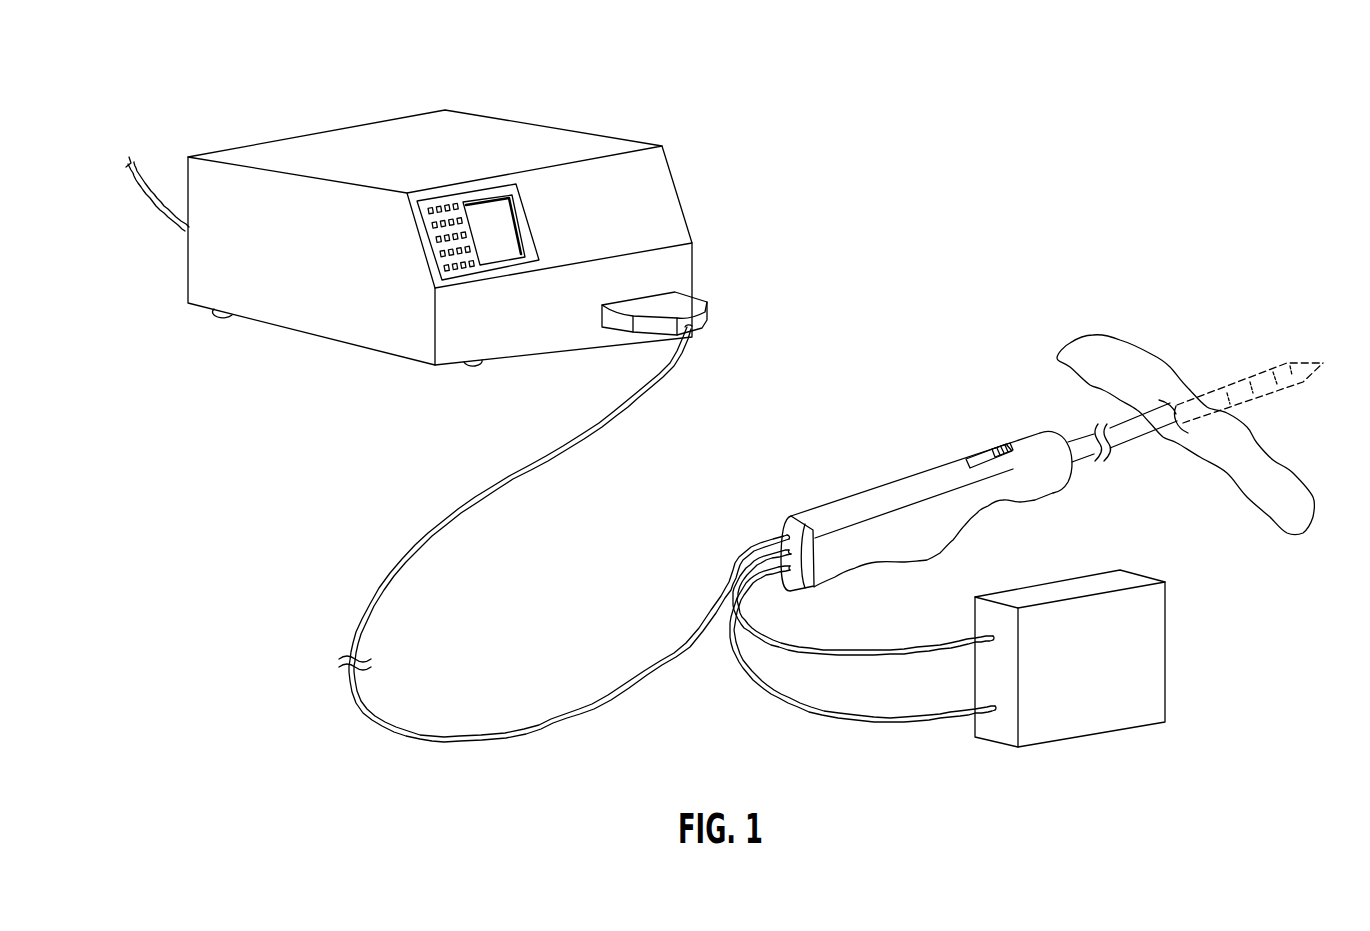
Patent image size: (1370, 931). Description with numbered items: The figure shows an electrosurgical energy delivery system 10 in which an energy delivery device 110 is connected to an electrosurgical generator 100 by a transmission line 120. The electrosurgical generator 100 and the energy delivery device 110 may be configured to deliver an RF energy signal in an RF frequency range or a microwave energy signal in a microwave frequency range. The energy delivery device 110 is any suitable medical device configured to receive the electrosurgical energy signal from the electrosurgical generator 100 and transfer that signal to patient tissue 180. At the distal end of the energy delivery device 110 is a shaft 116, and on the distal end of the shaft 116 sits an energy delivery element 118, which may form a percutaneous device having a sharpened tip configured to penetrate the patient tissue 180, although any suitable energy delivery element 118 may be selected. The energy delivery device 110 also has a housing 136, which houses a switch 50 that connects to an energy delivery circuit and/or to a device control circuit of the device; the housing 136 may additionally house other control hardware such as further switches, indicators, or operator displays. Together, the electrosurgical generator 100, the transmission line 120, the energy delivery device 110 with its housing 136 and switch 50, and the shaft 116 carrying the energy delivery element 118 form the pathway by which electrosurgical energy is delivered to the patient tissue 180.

The electrosurgical energy delivery system 10 is at (997, 86).
The switch 50 is at (1000, 446).
The electrosurgical generator 100 is at (628, 99).
The energy delivery device 110 is at (893, 446).
The shaft 116 is at (1113, 426).
The energy delivery element 118 is at (1291, 370).
The transmission line 120 is at (367, 715).
The housing 136 is at (978, 513).
The patient tissue 180 is at (1242, 483).